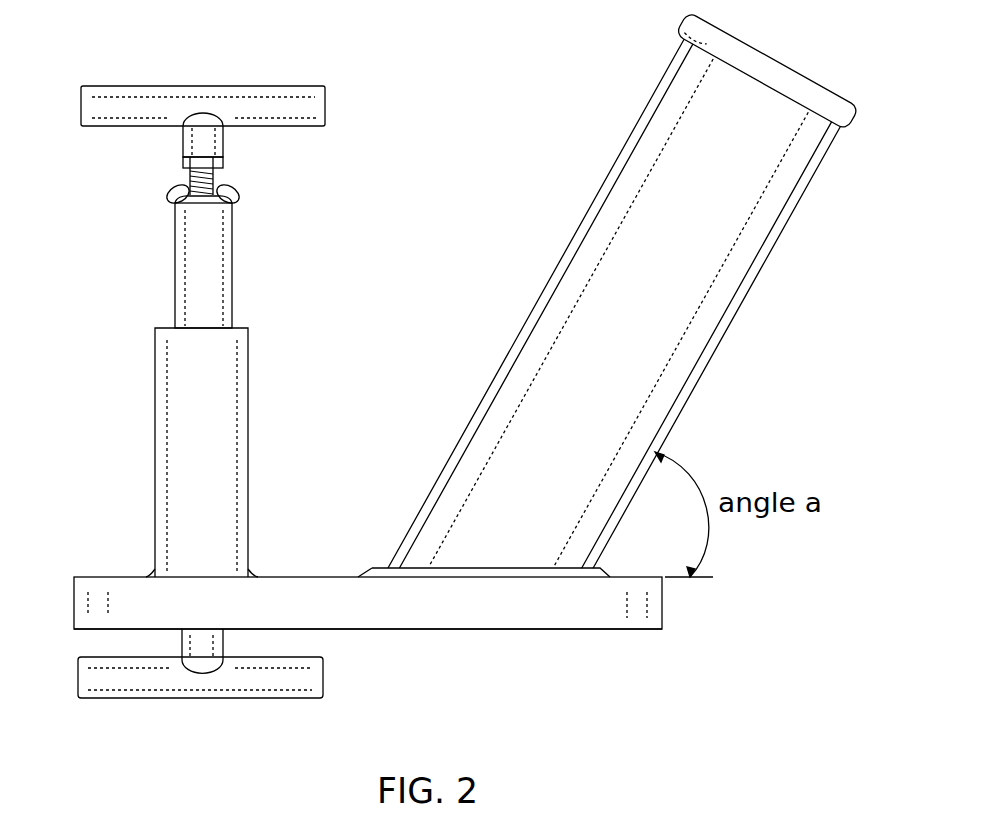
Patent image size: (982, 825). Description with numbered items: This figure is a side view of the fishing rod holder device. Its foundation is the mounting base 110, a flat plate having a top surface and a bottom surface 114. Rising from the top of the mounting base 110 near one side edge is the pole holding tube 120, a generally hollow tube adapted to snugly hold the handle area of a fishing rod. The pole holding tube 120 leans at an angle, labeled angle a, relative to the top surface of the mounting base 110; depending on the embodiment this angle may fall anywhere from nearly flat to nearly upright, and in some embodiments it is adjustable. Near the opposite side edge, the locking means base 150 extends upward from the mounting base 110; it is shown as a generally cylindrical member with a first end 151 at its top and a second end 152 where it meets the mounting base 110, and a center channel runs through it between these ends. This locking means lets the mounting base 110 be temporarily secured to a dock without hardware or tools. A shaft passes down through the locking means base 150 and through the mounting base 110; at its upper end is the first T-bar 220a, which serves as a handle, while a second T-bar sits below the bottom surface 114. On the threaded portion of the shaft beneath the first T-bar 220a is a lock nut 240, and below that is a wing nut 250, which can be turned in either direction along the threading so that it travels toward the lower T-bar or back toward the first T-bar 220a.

The mounting base 110 is at (627, 630).
The bottom surface 114 is at (545, 630).
The pole holding tube 120 is at (690, 395).
The locking means base 150 is at (177, 403).
The first end 151 is at (155, 329).
The second end 152 is at (160, 577).
The first T-bar 220a is at (292, 85).
The lock nut 240 is at (225, 159).
The wing nut 250 is at (240, 188).